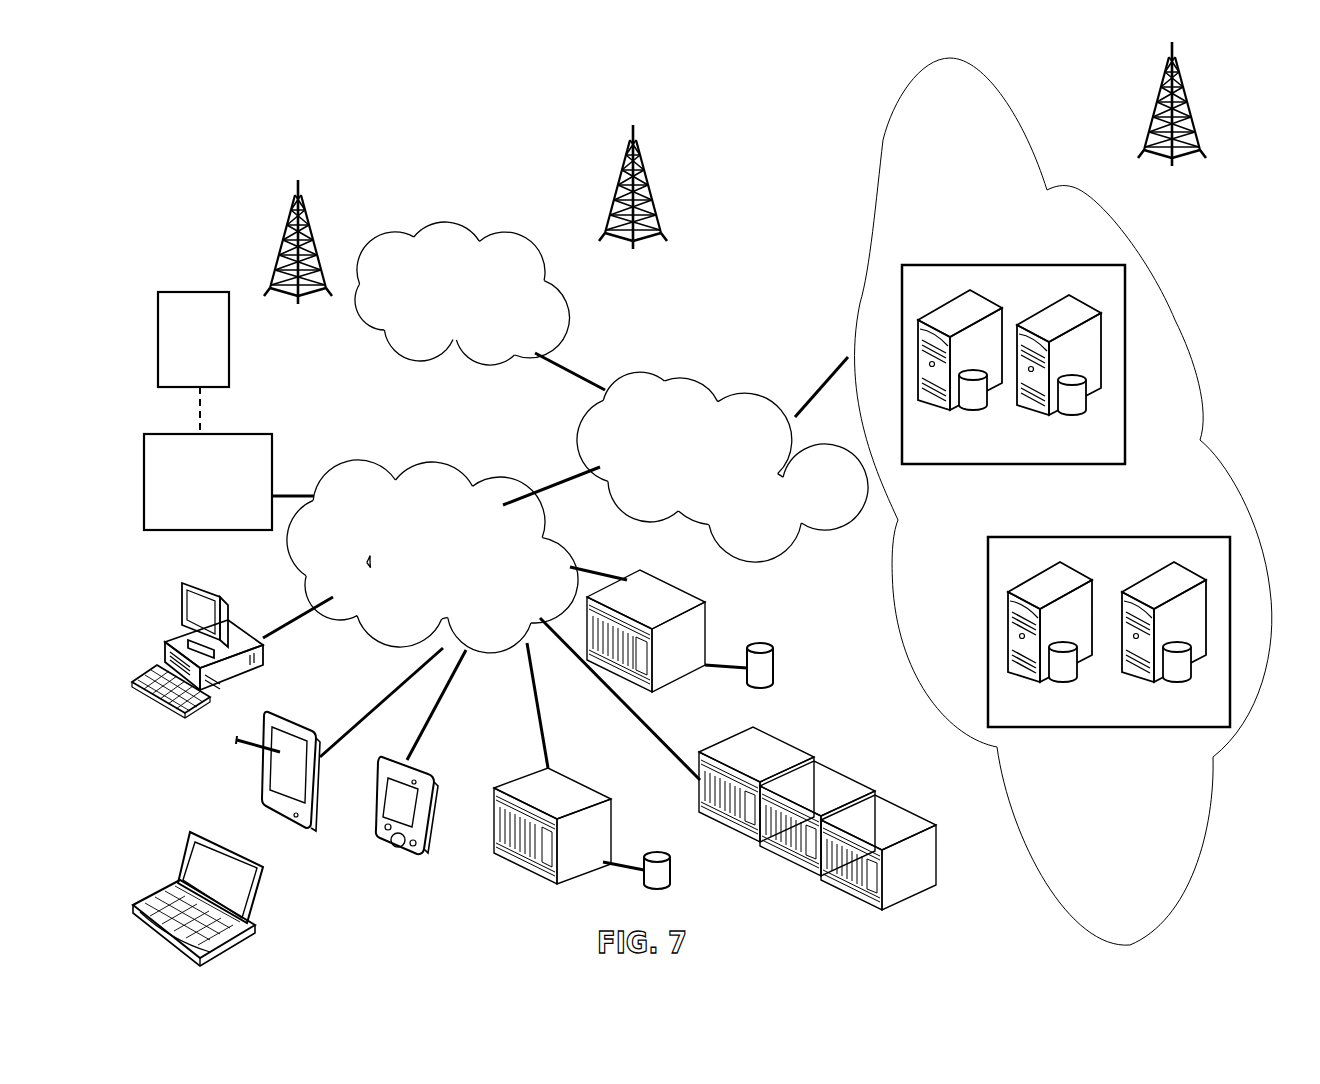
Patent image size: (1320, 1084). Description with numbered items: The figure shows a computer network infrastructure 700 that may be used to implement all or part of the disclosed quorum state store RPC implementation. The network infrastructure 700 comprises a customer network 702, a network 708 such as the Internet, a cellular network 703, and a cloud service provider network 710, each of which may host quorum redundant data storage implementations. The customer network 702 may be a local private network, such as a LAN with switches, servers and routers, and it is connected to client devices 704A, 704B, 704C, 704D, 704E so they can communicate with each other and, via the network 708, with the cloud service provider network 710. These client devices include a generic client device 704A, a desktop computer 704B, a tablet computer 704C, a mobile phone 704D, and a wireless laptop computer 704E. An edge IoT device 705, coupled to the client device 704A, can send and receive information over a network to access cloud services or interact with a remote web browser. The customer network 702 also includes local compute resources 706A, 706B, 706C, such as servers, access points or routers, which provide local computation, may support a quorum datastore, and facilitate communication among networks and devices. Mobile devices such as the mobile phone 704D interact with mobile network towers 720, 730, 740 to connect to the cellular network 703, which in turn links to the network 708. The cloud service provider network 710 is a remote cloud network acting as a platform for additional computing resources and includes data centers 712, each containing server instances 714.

The network infrastructure 700 is at (383, 155).
The customer network 702 is at (400, 465).
The cellular network 703 is at (487, 243).
The client device 704A is at (233, 433).
The desktop computer 704B is at (210, 592).
The tablet computer 704C is at (290, 713).
The mobile phone 704D is at (428, 762).
The laptop computer 704E is at (260, 890).
The edge IoT device 705 is at (173, 290).
The local compute resource 706A is at (553, 795).
The local compute resource 706B is at (707, 622).
The local compute resource 706C is at (773, 735).
The network 708 is at (660, 372).
The cloud service provider network 710 is at (1172, 267).
The data center 712 is at (1066, 475).
The server instance 714 is at (967, 405).
The mobile network tower 720 is at (633, 209).
The mobile network tower 730 is at (298, 259).
The mobile network tower 740 is at (1172, 123).